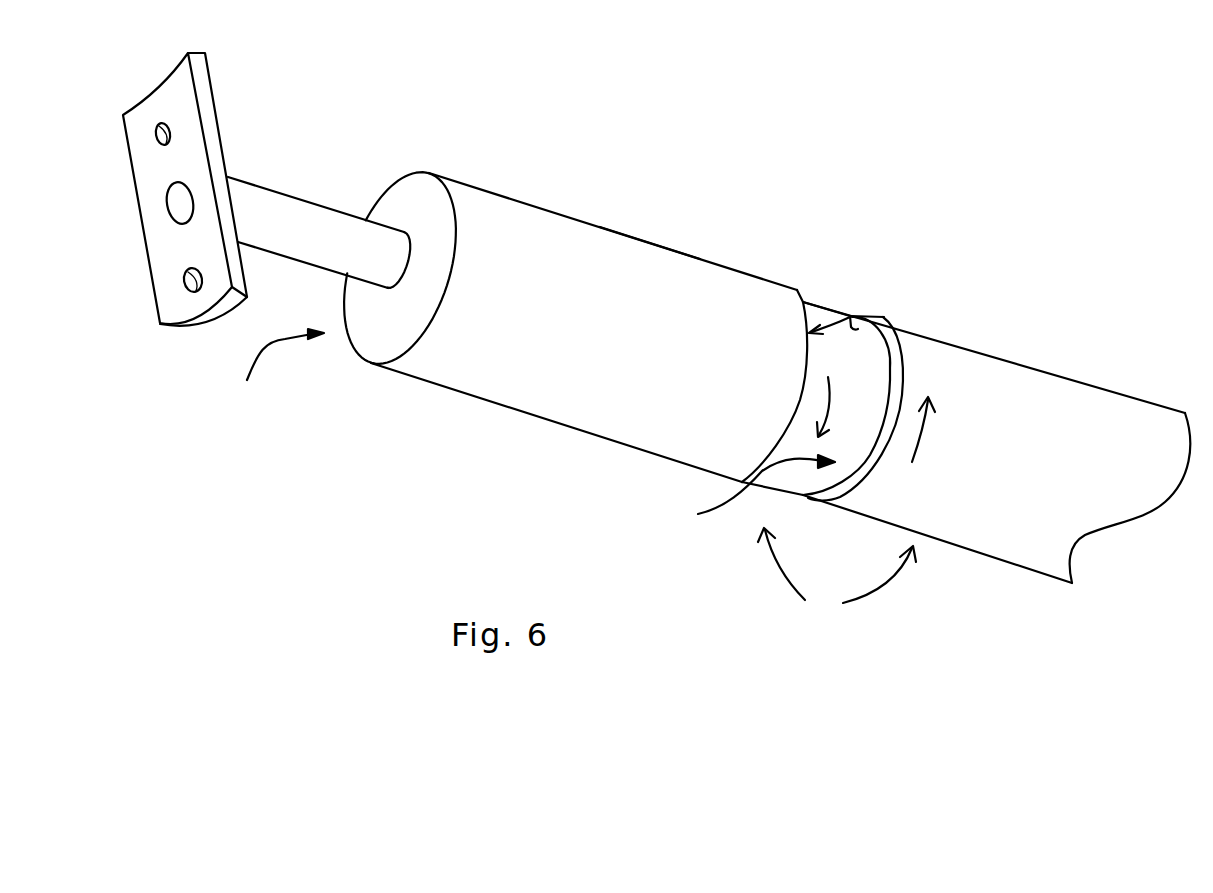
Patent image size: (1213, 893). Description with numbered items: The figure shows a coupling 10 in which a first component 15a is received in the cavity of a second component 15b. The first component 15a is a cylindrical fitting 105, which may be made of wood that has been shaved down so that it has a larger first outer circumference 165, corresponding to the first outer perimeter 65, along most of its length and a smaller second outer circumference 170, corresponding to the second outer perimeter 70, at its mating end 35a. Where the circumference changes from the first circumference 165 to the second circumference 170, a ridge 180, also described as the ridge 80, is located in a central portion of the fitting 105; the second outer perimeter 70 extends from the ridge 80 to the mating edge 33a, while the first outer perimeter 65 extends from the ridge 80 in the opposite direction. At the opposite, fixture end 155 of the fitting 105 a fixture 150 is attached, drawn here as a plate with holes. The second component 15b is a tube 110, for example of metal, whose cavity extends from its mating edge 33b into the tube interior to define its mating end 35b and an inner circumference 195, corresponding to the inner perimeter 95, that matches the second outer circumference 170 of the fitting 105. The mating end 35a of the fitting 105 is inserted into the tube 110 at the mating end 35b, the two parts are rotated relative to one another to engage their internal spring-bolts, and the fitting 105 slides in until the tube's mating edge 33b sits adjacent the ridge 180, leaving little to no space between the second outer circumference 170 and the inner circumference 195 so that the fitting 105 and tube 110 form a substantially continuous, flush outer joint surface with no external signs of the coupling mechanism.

The tube assembly 10 is at (837, 575).
The first component 15a is at (547, 235).
The second component 15b is at (997, 377).
The mating edge 33a is at (802, 395).
The mating edge 33b is at (900, 362).
The mating end 35a is at (849, 315).
The mating end 35b is at (743, 489).
The first outer perimeter 65 is at (503, 408).
The second outer perimeter 70 is at (817, 302).
The ridge 80 is at (806, 322).
The inner perimeter 95 is at (890, 380).
The fitting 105 is at (608, 242).
The tube 110 is at (1067, 402).
The fixture 150 is at (177, 310).
The fixture end 155 is at (275, 368).
The first outer circumference 165 is at (575, 432).
The second outer circumference 170 is at (853, 318).
The ridge 180 is at (773, 447).
The inner circumference 195 is at (883, 318).